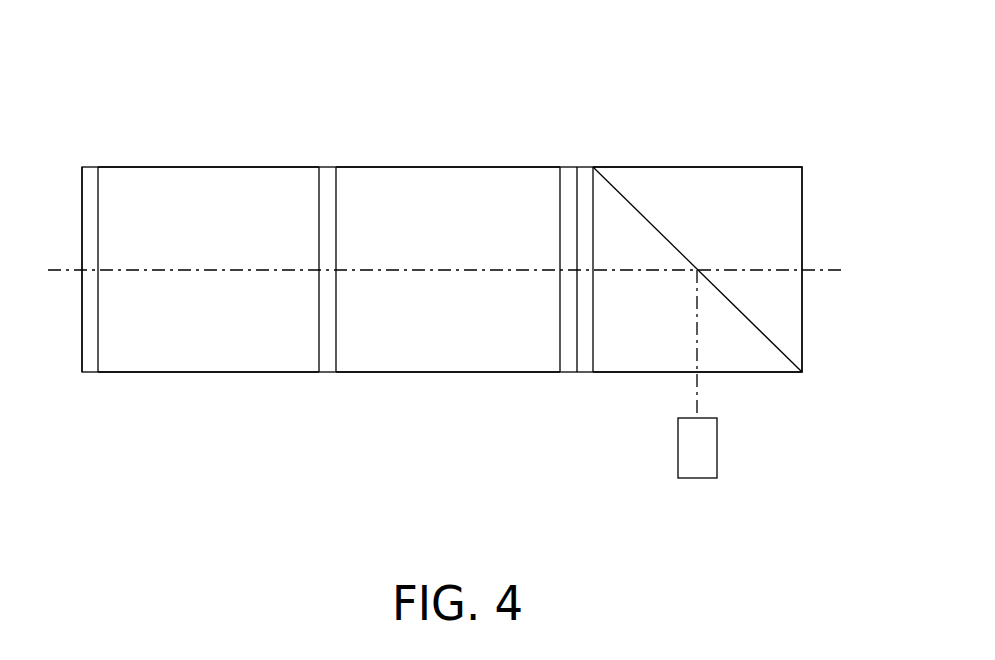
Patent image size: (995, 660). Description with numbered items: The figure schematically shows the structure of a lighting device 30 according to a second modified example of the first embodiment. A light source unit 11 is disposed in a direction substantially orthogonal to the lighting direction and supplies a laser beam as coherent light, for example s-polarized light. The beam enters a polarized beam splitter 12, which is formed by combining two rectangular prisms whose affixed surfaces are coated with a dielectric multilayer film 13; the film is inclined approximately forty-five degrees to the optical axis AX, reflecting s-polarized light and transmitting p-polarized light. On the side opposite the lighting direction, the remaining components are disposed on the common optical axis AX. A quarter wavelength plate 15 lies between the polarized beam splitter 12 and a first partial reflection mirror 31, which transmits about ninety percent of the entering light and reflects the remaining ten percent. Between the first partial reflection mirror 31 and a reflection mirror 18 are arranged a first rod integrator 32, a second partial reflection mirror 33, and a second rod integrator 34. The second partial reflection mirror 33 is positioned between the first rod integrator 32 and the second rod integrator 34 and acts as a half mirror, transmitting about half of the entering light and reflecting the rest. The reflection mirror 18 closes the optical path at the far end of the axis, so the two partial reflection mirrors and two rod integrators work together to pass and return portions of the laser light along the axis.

The lighting device 30 is at (190, 128).
The reflection mirror 18 is at (91, 182).
The second rod integrator 34 is at (248, 178).
The second partial reflection mirror 33 is at (327, 178).
The first rod integrator 32 is at (427, 178).
The first partial reflection mirror 31 is at (568, 178).
The 1/4 wavelength plate 15 is at (586, 178).
The polarized beam splitter 12 is at (752, 176).
The dielectric multilayer film 13 is at (794, 360).
The light source unit 11 is at (694, 480).
The optical axis AX is at (70, 268).